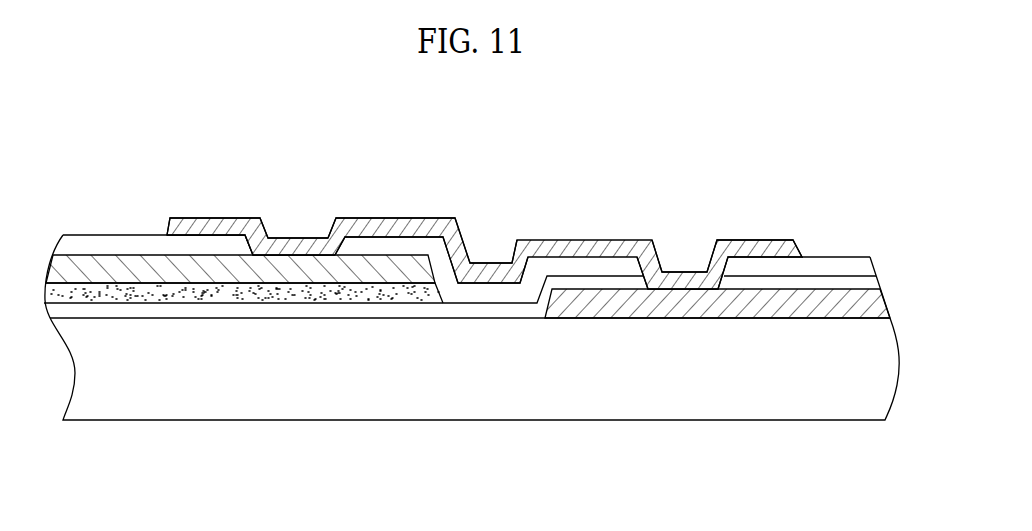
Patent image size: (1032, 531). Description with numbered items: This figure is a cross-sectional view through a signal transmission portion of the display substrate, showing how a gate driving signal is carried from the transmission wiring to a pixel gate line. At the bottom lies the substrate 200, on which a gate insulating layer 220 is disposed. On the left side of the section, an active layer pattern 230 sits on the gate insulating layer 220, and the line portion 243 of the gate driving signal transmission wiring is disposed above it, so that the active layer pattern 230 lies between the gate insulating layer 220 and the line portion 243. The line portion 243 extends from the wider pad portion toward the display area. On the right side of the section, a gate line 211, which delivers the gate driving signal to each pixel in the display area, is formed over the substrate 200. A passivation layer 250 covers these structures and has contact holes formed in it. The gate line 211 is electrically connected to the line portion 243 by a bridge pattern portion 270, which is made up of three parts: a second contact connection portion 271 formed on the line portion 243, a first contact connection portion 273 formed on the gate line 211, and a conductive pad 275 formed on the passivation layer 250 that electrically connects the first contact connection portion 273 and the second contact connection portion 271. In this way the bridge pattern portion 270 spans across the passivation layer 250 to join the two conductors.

The substrate 200 is at (542, 397).
The gate line 211 is at (767, 303).
The gate insulating layer 220 is at (295, 307).
The active layer pattern 230 is at (405, 288).
The line portion 243 is at (168, 268).
The passivation layer 250 is at (118, 247).
The bridge pattern portion 270 is at (298, 138).
The second contact connection portion 271 is at (287, 237).
The first contact connection portion 273 is at (673, 270).
The conductive pad 275 is at (425, 218).